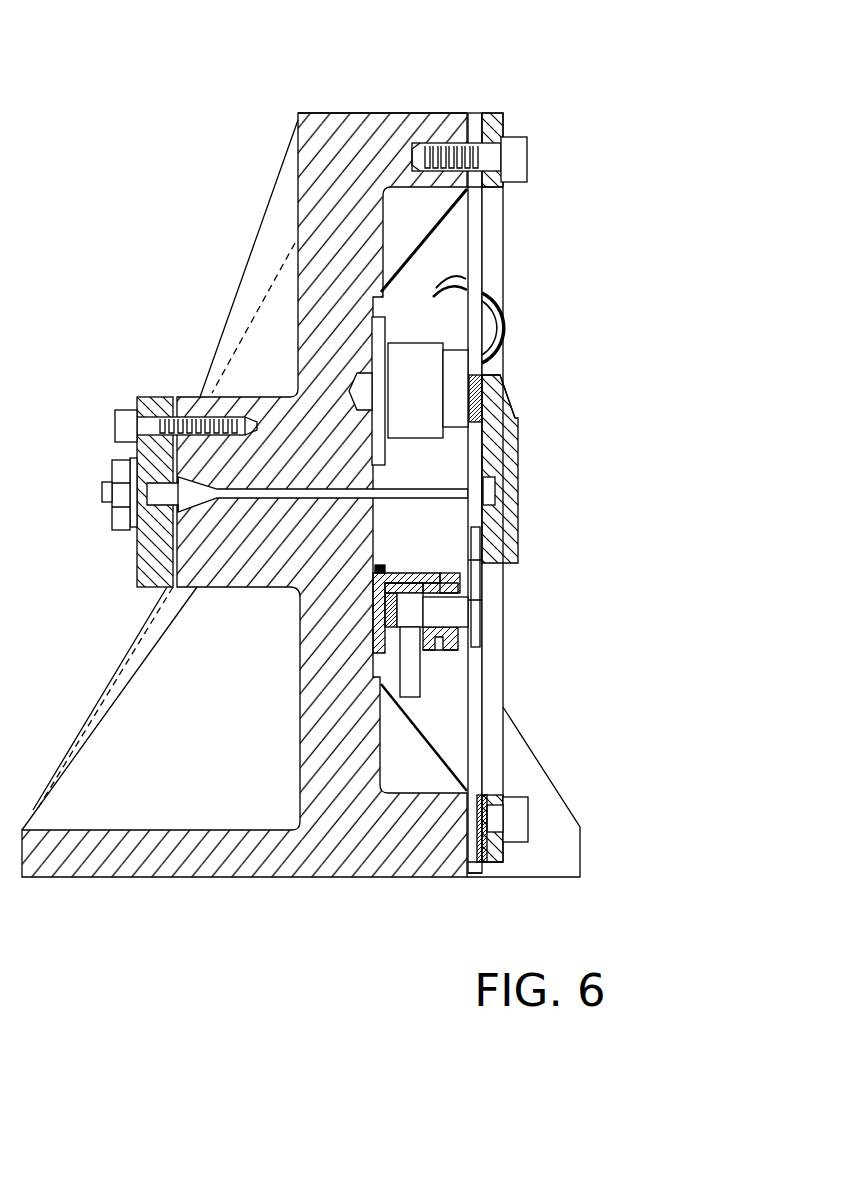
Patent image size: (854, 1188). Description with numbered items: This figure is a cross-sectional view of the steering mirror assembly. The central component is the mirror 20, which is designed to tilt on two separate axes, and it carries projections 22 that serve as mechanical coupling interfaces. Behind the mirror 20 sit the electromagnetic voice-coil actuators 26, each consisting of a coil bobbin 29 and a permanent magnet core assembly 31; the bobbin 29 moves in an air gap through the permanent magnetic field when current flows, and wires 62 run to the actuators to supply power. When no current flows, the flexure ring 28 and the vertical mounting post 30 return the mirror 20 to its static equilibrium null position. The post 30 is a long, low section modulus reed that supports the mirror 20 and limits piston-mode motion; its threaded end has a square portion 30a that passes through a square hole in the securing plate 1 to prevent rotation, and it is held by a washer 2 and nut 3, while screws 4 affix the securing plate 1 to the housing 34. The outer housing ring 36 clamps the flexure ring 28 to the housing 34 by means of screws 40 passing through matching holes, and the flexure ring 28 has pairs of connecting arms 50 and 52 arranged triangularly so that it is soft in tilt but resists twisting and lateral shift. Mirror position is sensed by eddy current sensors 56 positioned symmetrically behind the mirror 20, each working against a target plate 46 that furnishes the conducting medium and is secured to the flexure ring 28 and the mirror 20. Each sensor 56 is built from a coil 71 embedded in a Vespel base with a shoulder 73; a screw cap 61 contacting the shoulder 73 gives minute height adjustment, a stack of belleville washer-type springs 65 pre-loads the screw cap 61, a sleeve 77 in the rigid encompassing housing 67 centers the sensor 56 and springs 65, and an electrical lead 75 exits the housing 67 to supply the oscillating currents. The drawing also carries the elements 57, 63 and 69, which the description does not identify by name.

The securing plate 1 is at (138, 552).
The washer 2 is at (133, 530).
The nut 3 is at (117, 523).
The screws 4 is at (113, 425).
The mirror 20 is at (522, 472).
The projections 22 is at (508, 398).
The electromagnetic voice-coil actuators 26 is at (410, 343).
The flexure ring 28 is at (475, 113).
The coil bobbin 29 is at (455, 350).
The vertical mounting post 30 is at (440, 489).
The square portion 30a is at (137, 587).
The permanent magnet core assembly 31 is at (372, 360).
The housing 34 is at (344, 106).
The outer housing ring 36 is at (488, 113).
The screws 40 is at (506, 137).
The target plate 46 is at (476, 376).
The connecting arms 50 is at (487, 757).
The connecting arms 52 is at (487, 200).
The sensors 56 is at (483, 378).
The gusset rib 57 is at (298, 230).
The screw cap 61 is at (445, 650).
The wires 62 is at (490, 315).
The clamp block 63 is at (485, 603).
The belleville washer-type springs 65 is at (378, 628).
The housing 67 is at (428, 573).
The notch 69 is at (385, 570).
The coil 71 is at (428, 625).
The shoulder 73 is at (398, 612).
The electrical lead 75 is at (383, 645).
The sleeve 77 is at (405, 573).